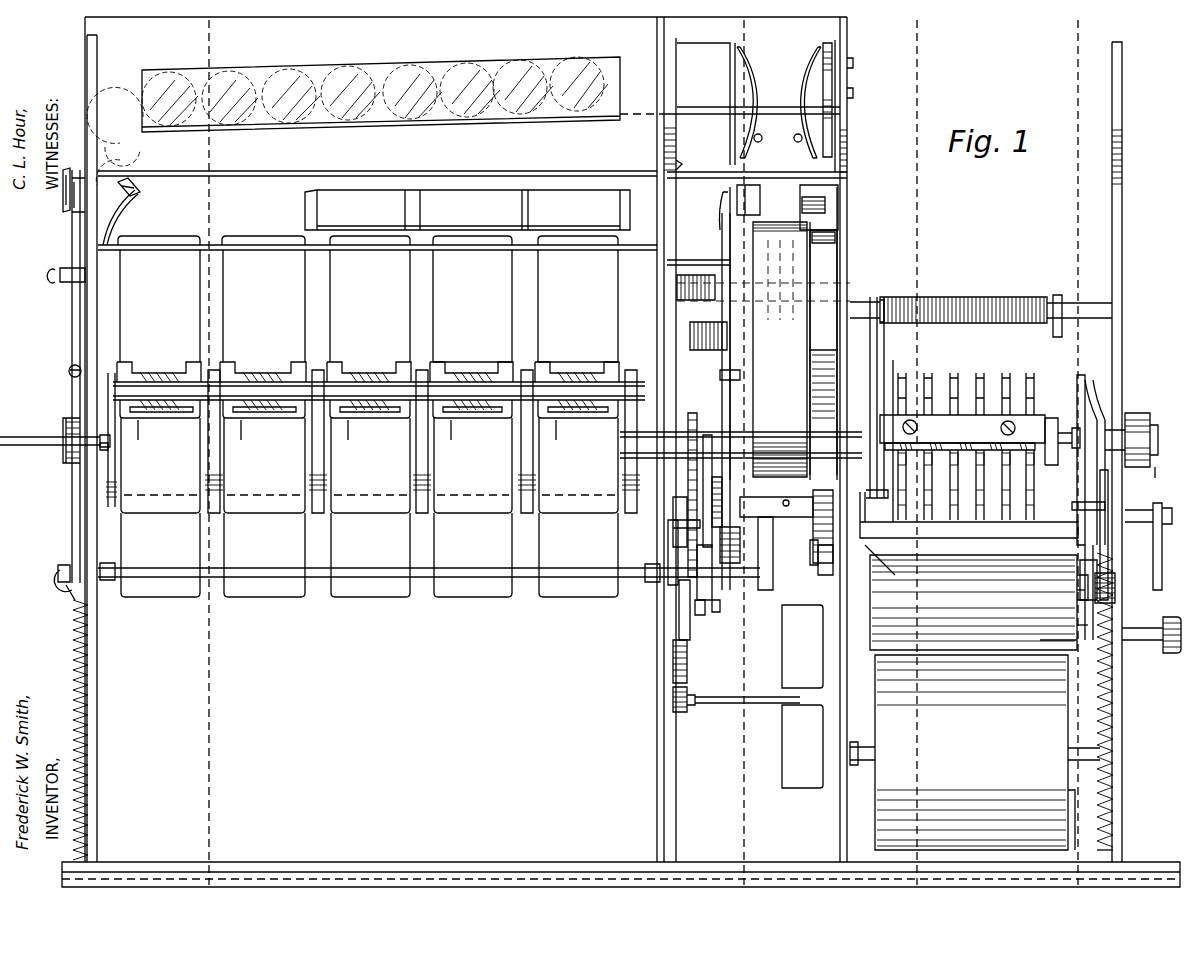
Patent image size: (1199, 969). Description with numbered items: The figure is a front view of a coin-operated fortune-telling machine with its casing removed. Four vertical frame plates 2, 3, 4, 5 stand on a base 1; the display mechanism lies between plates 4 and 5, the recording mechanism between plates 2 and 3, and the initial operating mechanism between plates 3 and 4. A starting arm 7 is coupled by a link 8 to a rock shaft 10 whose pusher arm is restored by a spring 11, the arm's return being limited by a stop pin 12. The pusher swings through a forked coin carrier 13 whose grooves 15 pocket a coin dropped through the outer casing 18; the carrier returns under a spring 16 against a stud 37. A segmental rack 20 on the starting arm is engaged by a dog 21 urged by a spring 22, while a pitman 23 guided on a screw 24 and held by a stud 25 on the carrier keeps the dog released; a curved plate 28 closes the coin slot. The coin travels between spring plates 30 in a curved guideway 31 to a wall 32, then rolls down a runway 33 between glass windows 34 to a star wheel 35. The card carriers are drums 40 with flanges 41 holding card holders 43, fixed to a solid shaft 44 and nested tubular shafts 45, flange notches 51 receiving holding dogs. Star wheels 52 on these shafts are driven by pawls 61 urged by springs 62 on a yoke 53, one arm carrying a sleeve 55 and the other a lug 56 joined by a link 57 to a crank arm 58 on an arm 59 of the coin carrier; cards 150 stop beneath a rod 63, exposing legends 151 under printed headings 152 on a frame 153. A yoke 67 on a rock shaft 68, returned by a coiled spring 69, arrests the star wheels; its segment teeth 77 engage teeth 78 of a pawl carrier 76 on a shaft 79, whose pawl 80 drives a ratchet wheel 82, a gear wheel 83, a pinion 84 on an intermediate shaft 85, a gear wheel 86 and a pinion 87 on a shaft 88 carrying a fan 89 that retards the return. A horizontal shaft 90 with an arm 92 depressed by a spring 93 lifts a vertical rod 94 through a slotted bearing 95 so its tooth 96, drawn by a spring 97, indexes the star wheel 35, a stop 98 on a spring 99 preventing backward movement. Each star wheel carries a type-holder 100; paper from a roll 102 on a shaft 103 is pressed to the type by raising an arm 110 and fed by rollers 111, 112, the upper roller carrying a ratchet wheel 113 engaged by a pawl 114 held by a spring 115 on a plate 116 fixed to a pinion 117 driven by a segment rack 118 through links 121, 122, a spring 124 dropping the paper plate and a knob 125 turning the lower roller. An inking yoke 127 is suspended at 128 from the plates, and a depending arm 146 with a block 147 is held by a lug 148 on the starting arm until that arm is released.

The base 1 is at (378, 860).
The vertical frame plate 2 is at (1148, 846).
The vertical frame plate 3 is at (840, 840).
The vertical frame plate 4 is at (664, 128).
The vertical frame plate 5 is at (100, 836).
The starting arm 7 is at (742, 533).
The link 8 is at (720, 373).
The rock shaft 10 is at (676, 288).
The spring 11 is at (686, 262).
The stop pin 12 is at (724, 486).
The forked coin carrier 13 is at (820, 196).
The grooves 15 is at (826, 206).
The spring 16 is at (690, 332).
The outer casing 18 is at (723, 200).
The curved segmental rack 20 is at (707, 435).
The dog 21 is at (704, 592).
The spring 22 is at (673, 530).
The pitman 23 is at (664, 150).
The screw 24 is at (680, 168).
The stud 25 is at (716, 176).
The curved plate 28 is at (763, 333).
The converging spring plates 30 is at (758, 62).
The curved guideway 31 is at (833, 52).
The wall 32 is at (835, 85).
The runway 33 is at (700, 107).
The glass windows 34 is at (306, 200).
The star wheel 35 is at (62, 192).
The stud 37 is at (838, 237).
The drums 40 is at (296, 390).
The flanges 41 is at (392, 372).
The card holders 43 is at (192, 366).
The innermost shaft 44 is at (1158, 440).
The tubular shafts 45 is at (645, 432).
The notches 51 is at (320, 452).
The star wheels 52 is at (965, 378).
The yoke 53 is at (1082, 485).
The sleeve 55 is at (1051, 403).
The lug 56 is at (880, 525).
The link 57 is at (870, 296).
The crank arm 58 is at (885, 298).
The arm 59 is at (830, 282).
The pawl 61 is at (974, 450).
The springs 62 is at (944, 446).
The rod 63 is at (496, 248).
The yoke 67 is at (828, 362).
The rock shaft 68 is at (1082, 302).
The coiled spring 69 is at (1003, 296).
The pawl carrier 76 is at (826, 575).
The teeth 77 is at (808, 465).
The teeth 78 is at (835, 530).
The transverse shaft 79 is at (772, 540).
The pawl 80 is at (812, 563).
The ratchet wheel 82 is at (813, 530).
The gear wheel 83 is at (692, 413).
The pinion 84 is at (695, 632).
The intermediate shaft 85 is at (664, 605).
The gear wheel 86 is at (673, 660).
The pinion 87 is at (672, 700).
The shaft 88 is at (725, 702).
The fan 89 is at (782, 745).
The horizontal shaft 90 is at (525, 590).
The arm 92 is at (62, 598).
The spring 93 is at (73, 684).
The vertical rod 94 is at (72, 510).
The slotted bearing 95 is at (58, 276).
The tooth 96 is at (70, 214).
The spring 97 is at (68, 371).
The stop 98 is at (138, 186).
The spring 99 is at (110, 230).
The type-holder 100 is at (900, 378).
The roll 102 is at (975, 752).
The shaft 103 is at (1085, 818).
The arm 110 is at (1163, 540).
The lower feed roller 111 is at (1016, 650).
The upper feed roller 112 is at (973, 602).
The ratchet wheel 113 is at (1076, 580).
The pawl 114 is at (1080, 620).
The spring 115 is at (1080, 596).
The plate 116 is at (1094, 570).
The pinion 117 is at (1118, 595).
The segment rack 118 is at (1115, 688).
The link 121 is at (1110, 494).
The link 122 is at (1100, 440).
The spring 124 is at (1115, 795).
The knob 125 is at (1153, 646).
The yoke 127 is at (978, 532).
The suspension 128 is at (1088, 403).
The depending arm 146 is at (748, 620).
The block 147 is at (738, 630).
The lug 148 is at (742, 517).
The cards 150 is at (472, 350).
The legend 151 is at (360, 278).
The printed headings 152 is at (492, 208).
The frame 153 is at (300, 226).